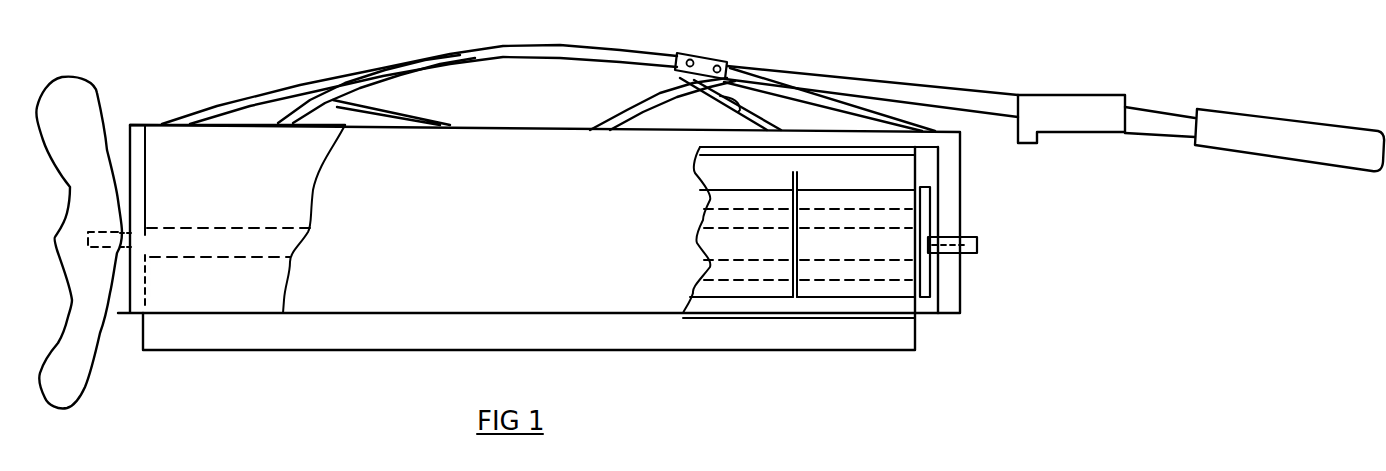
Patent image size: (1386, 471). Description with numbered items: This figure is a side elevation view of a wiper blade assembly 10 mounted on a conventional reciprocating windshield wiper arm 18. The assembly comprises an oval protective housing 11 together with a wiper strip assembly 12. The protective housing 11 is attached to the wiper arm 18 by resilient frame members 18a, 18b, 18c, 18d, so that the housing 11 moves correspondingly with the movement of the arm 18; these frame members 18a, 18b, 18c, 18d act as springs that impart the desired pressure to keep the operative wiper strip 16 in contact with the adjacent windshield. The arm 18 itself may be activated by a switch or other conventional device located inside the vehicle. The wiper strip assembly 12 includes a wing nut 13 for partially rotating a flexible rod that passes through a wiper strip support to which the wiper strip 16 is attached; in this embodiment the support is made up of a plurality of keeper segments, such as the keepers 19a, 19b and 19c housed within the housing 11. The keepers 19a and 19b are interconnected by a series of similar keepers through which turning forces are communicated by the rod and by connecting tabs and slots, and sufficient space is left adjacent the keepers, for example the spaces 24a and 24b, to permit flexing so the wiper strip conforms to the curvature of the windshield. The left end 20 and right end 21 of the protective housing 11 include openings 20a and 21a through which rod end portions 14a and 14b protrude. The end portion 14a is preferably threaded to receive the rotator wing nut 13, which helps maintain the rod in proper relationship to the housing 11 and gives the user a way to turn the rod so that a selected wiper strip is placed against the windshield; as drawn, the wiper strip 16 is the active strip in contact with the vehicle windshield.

The wiper blade assembly 10 is at (402, 371).
The protective housing 11 is at (195, 155).
The wiper strip assembly 12 is at (530, 220).
The wing nut 13 is at (88, 328).
The rod end portion 14a is at (157, 278).
The rod end portion 14b is at (985, 237).
The wiper strip 16 is at (750, 337).
The wiper arm 18 is at (920, 90).
The resilient frame member 18a is at (418, 60).
The resilient frame member 18b is at (397, 107).
The resilient frame member 18c is at (623, 117).
The resilient frame member 18d is at (688, 92).
The keeper 19a is at (248, 284).
The keeper 19b is at (868, 250).
The keeper 19c is at (740, 270).
The left end 20 is at (143, 188).
The opening 20a is at (147, 227).
The right end 21 is at (950, 185).
The opening 21a is at (950, 255).
The space 24a is at (793, 187).
The space 24b is at (835, 120).